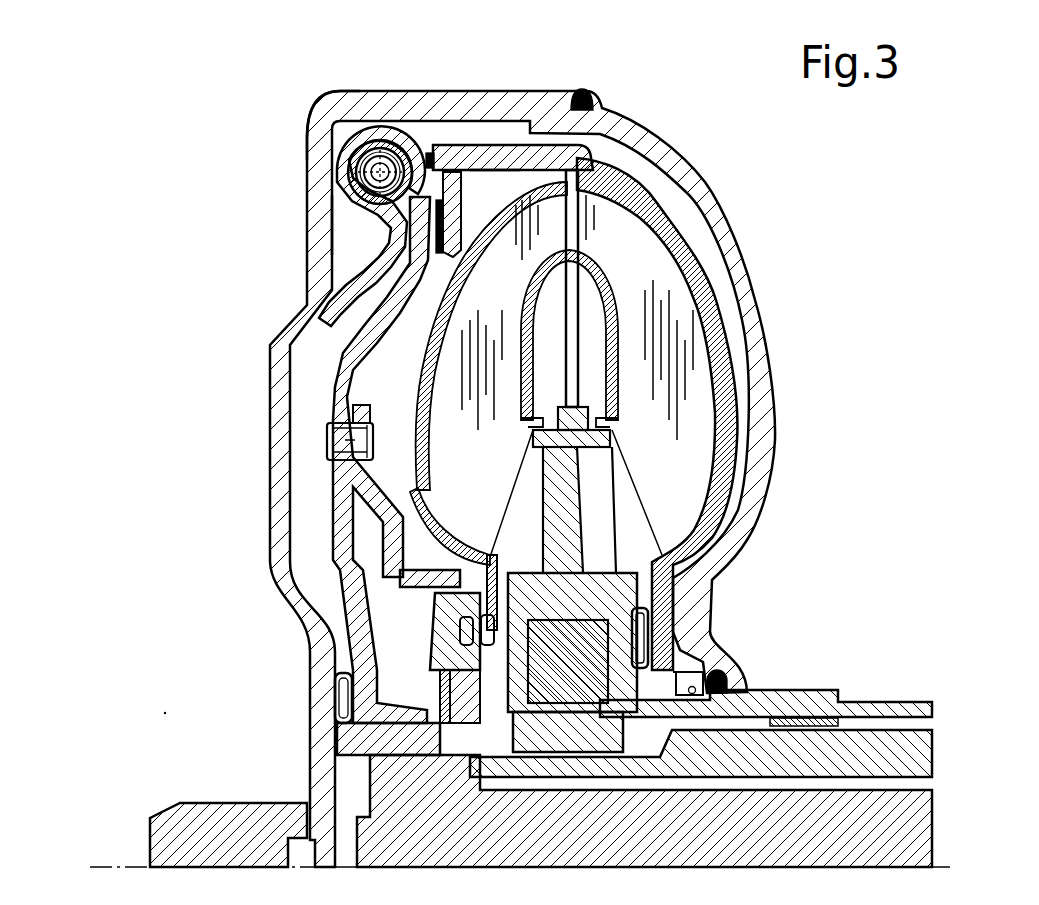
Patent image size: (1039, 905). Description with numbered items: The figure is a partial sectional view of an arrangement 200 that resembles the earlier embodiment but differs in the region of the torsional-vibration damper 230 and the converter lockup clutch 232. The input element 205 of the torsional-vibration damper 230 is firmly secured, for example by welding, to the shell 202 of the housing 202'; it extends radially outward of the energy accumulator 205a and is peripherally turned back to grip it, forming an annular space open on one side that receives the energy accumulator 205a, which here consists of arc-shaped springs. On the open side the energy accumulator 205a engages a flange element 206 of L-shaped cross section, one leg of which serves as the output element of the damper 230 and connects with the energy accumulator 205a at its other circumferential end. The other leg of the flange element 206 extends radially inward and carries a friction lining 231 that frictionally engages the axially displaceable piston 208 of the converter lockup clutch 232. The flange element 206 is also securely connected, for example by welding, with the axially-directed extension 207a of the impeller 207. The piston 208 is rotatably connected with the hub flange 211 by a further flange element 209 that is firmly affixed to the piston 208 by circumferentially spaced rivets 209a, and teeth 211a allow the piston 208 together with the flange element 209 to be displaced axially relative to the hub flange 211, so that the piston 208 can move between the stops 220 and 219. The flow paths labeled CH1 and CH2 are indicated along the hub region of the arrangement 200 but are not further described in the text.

The arrangement 200 is at (740, 185).
The shell 202 is at (492, 479).
The housing 202' is at (312, 110).
The input element 205 is at (350, 276).
The energy accumulator 205a is at (372, 160).
The flange element 206 is at (470, 162).
The impeller 207 is at (684, 240).
The axially-directed extension 207a is at (490, 198).
The piston 208 is at (400, 160).
The flange element 209 is at (378, 504).
The rivets 209a is at (352, 430).
The hub flange 211 is at (488, 600).
The teeth 211a is at (450, 572).
The stop 219 is at (437, 696).
The stop 220 is at (340, 712).
The torsional-vibration damper 230 is at (346, 216).
The friction lining 231 is at (450, 208).
The converter lockup clutch 232 is at (586, 93).
The channel 1 CH1 is at (932, 780).
The channel 2 CH2 is at (932, 720).